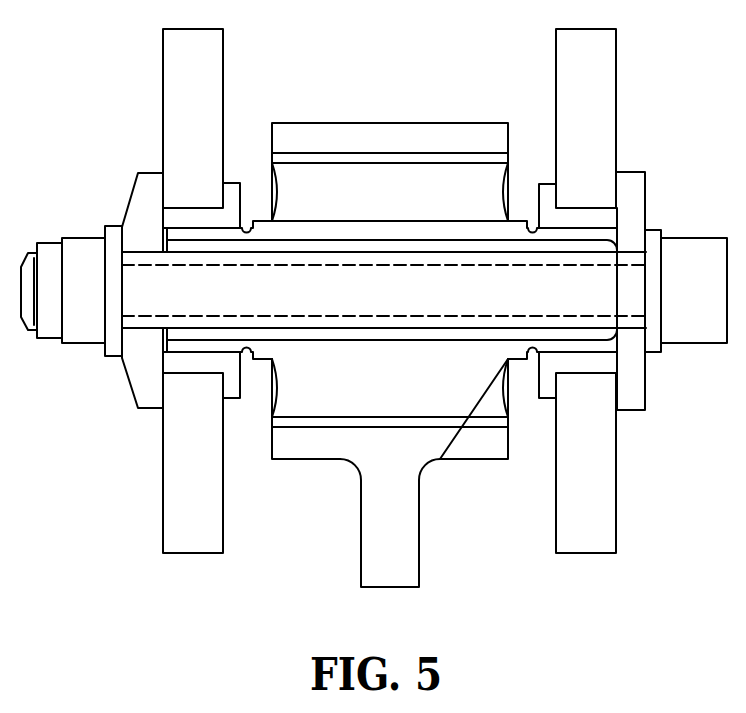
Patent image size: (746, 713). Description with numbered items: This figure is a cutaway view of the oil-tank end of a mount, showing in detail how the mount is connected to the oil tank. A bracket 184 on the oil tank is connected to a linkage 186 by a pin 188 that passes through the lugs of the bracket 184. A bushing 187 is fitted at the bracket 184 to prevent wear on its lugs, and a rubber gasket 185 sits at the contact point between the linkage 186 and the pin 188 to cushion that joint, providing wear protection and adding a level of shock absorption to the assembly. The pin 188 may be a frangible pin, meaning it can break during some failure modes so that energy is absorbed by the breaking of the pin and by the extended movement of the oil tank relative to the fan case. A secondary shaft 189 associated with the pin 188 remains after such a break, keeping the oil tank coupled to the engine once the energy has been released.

The bracket 184 is at (617, 83).
The rubber gasket 185 is at (275, 387).
The linkage 186 is at (360, 502).
The bushing 187 is at (538, 183).
The pin 188 is at (595, 332).
The secondary shaft 189 is at (196, 264).